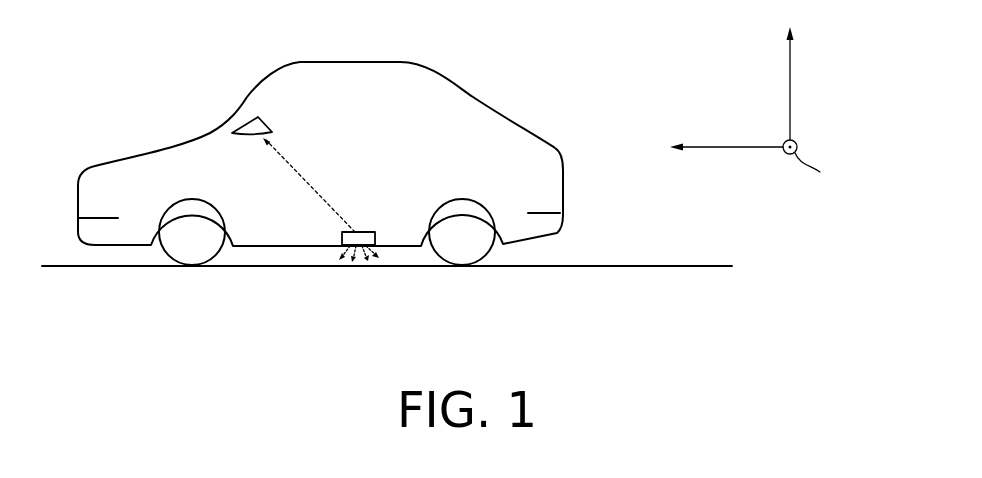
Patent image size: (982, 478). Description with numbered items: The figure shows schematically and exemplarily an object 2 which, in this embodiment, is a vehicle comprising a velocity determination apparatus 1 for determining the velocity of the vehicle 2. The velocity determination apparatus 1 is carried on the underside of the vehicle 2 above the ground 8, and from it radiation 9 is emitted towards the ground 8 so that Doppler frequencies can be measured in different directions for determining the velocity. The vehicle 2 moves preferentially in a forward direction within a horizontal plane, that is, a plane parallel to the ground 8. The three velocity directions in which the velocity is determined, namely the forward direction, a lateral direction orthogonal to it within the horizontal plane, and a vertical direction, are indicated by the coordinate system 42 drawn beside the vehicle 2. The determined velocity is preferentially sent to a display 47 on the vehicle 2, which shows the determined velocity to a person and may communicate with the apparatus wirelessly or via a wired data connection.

The velocity determination apparatus 1 is at (340, 234).
The object 2 is at (474, 97).
The ground 8 is at (630, 266).
The radiation 9 is at (396, 264).
The coordinate system 42 is at (815, 95).
The display 47 is at (254, 124).